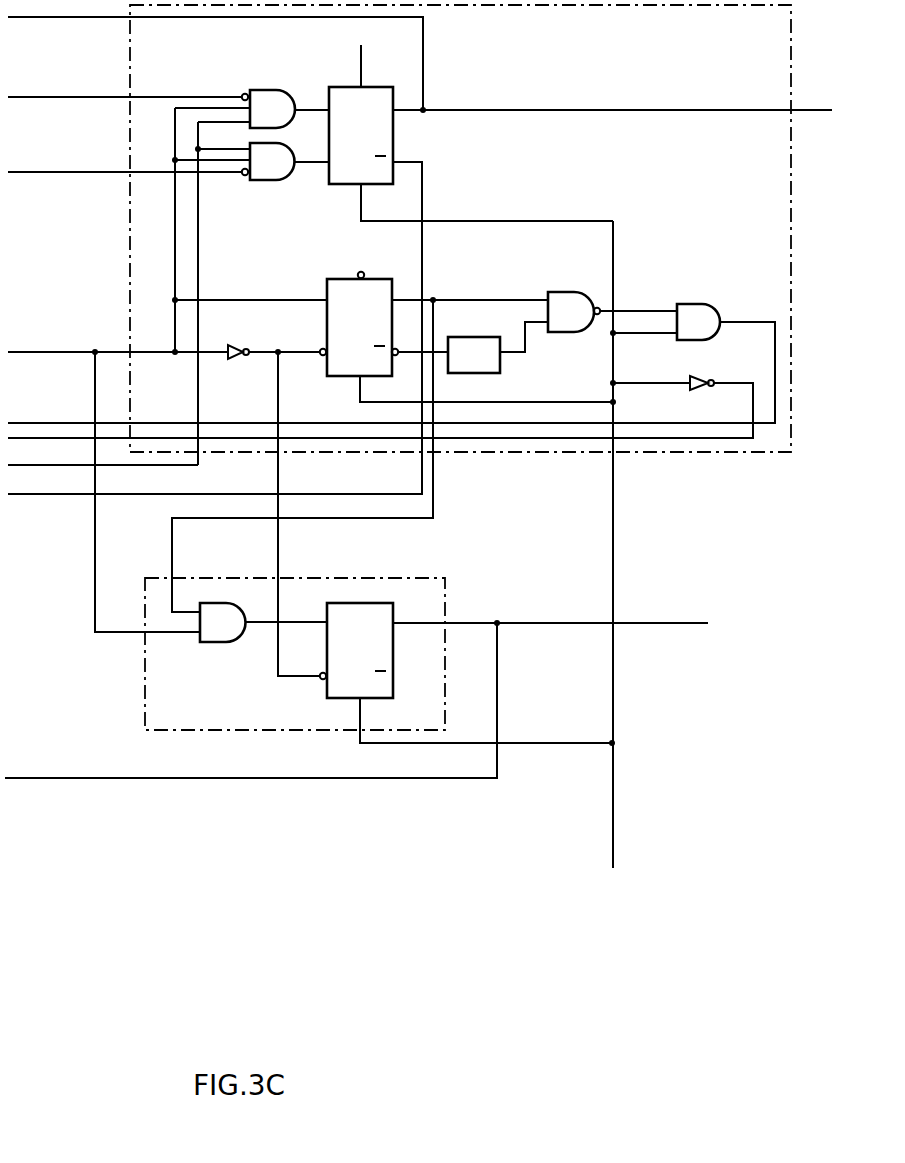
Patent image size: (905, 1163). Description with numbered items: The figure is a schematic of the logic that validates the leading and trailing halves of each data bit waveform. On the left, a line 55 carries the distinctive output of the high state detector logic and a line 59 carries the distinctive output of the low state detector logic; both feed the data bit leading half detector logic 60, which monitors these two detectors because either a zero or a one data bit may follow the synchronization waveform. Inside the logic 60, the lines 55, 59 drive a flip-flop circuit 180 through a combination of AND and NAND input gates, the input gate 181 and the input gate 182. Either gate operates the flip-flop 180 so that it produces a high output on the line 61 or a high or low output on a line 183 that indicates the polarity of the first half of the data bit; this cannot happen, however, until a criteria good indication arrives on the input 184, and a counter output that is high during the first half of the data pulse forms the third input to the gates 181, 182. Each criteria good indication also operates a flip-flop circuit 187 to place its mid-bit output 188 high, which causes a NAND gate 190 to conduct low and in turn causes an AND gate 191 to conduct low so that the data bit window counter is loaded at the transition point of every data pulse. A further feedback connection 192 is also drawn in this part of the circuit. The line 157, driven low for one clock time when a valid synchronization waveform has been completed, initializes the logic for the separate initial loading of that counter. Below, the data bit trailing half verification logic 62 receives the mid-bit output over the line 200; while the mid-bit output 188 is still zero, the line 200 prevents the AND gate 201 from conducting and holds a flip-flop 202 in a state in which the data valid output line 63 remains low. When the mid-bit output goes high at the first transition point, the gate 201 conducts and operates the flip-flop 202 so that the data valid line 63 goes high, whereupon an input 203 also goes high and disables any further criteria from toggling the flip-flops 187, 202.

The line 61 is at (85, 19).
The line 55 is at (85, 98).
The line 59 is at (85, 174).
The data bit leading half detector logic 60 is at (129, 253).
The input 184 is at (55, 350).
The input gate 181 is at (270, 88).
The input gate 182 is at (265, 181).
The flip-flop circuit 180 is at (341, 87).
The line 183 is at (424, 250).
The flip-flop circuit 187 is at (328, 279).
The mid-bit output 188 is at (482, 298).
The NAND gate 190 is at (554, 292).
The AND gate 191 is at (700, 304).
The inverter feedback line 192 is at (744, 443).
The line 200 is at (433, 478).
The data bit trailing half verification logic 62 is at (435, 578).
The AND gate 201 is at (205, 643).
The flip-flop 202 is at (394, 655).
The input 203 is at (200, 779).
The line 63 is at (648, 623).
The line 157 is at (613, 798).